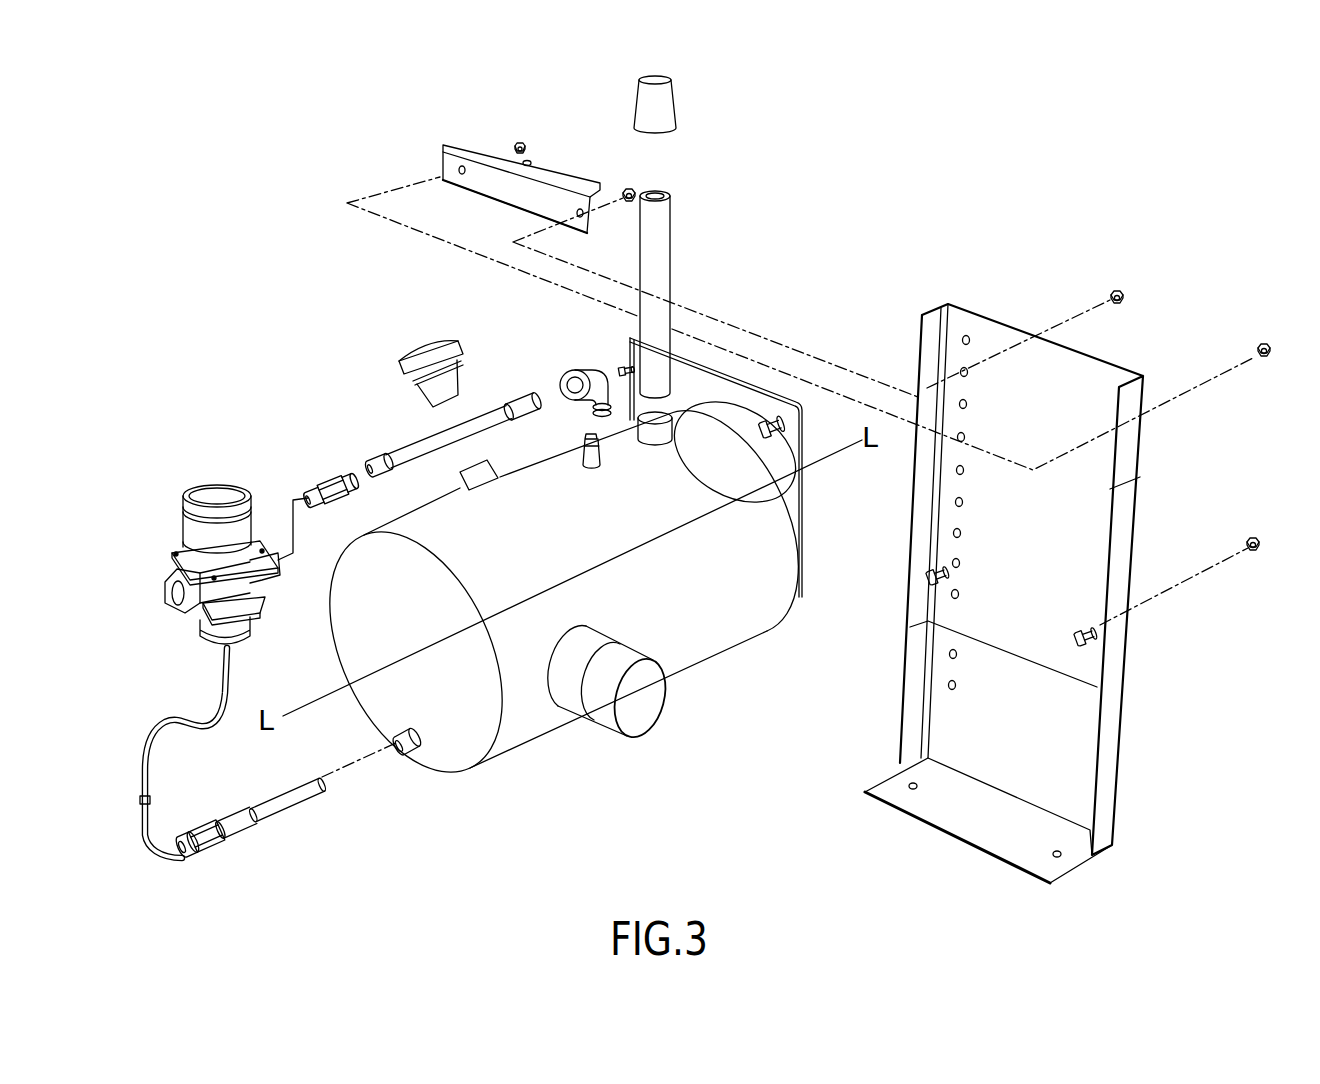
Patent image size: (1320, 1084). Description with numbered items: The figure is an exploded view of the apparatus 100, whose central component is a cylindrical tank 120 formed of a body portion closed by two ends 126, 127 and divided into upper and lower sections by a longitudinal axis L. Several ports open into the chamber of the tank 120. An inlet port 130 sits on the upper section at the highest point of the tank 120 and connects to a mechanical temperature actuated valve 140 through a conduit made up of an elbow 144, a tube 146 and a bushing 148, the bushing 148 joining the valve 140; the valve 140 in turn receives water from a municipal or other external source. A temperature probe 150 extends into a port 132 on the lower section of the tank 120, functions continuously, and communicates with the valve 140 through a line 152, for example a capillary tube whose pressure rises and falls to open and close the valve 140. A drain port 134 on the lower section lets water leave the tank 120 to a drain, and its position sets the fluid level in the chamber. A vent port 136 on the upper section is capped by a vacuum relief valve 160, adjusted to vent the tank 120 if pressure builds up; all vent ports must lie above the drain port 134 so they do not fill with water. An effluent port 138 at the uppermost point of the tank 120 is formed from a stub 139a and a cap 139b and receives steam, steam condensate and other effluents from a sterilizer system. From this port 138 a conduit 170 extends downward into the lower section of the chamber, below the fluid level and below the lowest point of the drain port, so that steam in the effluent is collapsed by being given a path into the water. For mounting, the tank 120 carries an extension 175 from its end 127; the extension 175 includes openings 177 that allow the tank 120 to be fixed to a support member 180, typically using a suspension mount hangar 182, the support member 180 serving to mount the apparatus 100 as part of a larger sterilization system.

The apparatus 100 is at (331, 320).
The tank 120 is at (735, 597).
The end 126 is at (472, 777).
The end 127 is at (803, 563).
The inlet port 130 is at (584, 441).
The port 132 is at (405, 755).
The drain port 134 is at (655, 700).
The vent port 136 is at (478, 465).
The effluent port 138 is at (657, 425).
The stub 139a is at (780, 498).
The cap 139b is at (680, 100).
The valve 140 is at (186, 500).
The elbow 144 is at (572, 373).
The tube 146 is at (497, 410).
The bushing 148 is at (312, 486).
The temperature probe 150 is at (286, 832).
The line 152 is at (195, 718).
The vacuum relief valve 160 is at (425, 348).
The conduit 170 is at (673, 245).
The extension 175 is at (757, 383).
The openings 177 is at (790, 426).
The support member 180 is at (1055, 572).
The suspension mount hangar 182 is at (485, 146).